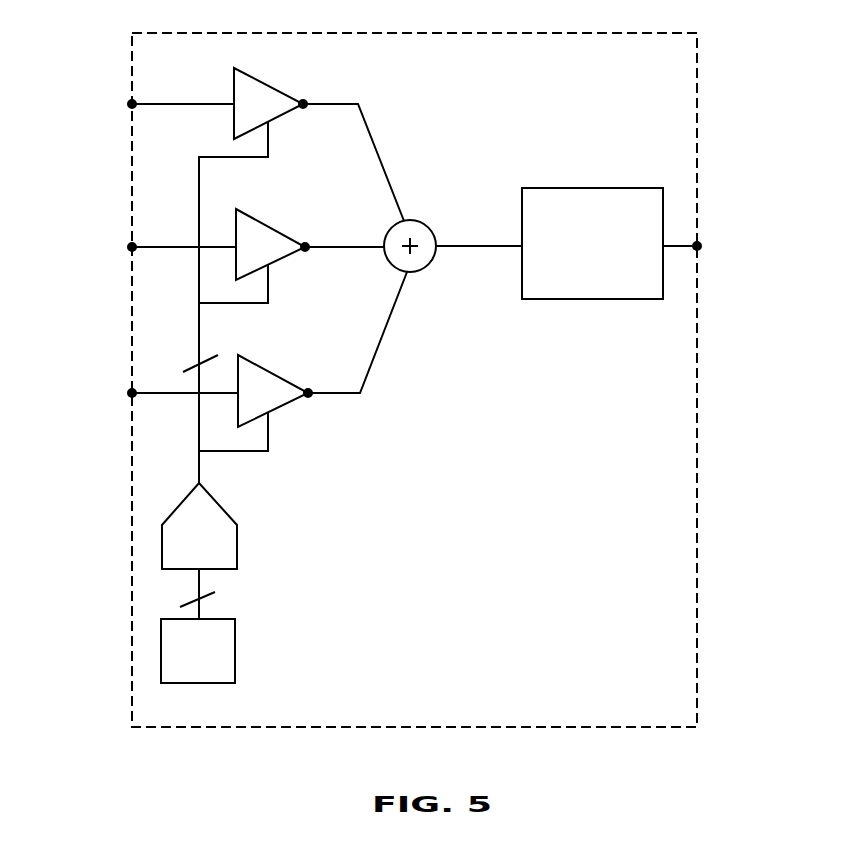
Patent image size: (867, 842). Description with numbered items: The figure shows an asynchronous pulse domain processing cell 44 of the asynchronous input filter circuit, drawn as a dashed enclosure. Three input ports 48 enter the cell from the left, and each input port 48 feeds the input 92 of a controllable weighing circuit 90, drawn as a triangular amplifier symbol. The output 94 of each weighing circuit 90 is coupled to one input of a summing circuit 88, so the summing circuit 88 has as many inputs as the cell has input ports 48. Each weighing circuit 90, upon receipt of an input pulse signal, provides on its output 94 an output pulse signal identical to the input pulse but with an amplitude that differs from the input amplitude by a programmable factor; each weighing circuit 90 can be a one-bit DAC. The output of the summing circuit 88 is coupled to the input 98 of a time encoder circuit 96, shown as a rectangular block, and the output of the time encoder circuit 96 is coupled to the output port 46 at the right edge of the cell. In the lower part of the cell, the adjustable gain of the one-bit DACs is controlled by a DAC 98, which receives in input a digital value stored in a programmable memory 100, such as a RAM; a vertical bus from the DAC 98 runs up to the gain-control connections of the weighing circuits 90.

The asynchronous pulse domain processing cell 44 is at (697, 655).
The output port 46 is at (700, 246).
The input port 48 is at (128, 104).
The summing circuit 88 is at (420, 270).
The controllable weighing circuit 90 is at (283, 91).
The input 92 is at (234, 107).
The output 94 is at (306, 108).
The time encoder circuit 96 is at (580, 299).
The DAC 98 is at (522, 245).
The programmable memory 100 is at (235, 650).